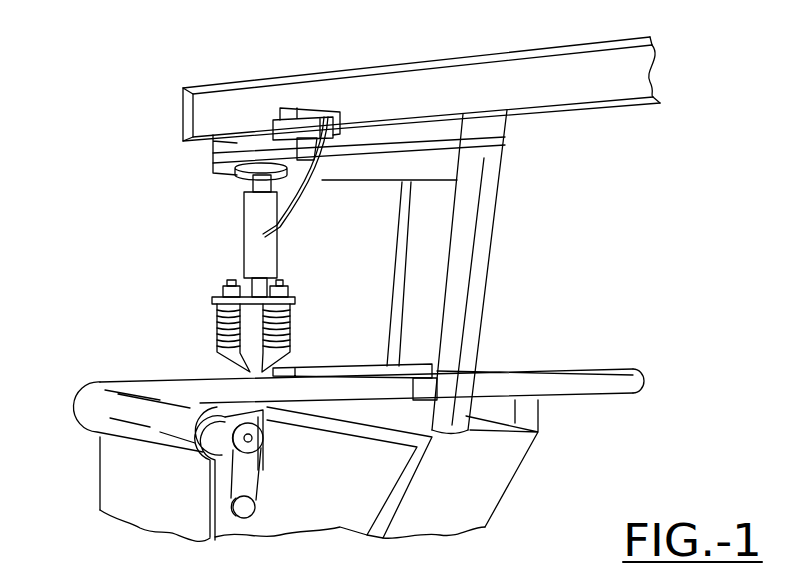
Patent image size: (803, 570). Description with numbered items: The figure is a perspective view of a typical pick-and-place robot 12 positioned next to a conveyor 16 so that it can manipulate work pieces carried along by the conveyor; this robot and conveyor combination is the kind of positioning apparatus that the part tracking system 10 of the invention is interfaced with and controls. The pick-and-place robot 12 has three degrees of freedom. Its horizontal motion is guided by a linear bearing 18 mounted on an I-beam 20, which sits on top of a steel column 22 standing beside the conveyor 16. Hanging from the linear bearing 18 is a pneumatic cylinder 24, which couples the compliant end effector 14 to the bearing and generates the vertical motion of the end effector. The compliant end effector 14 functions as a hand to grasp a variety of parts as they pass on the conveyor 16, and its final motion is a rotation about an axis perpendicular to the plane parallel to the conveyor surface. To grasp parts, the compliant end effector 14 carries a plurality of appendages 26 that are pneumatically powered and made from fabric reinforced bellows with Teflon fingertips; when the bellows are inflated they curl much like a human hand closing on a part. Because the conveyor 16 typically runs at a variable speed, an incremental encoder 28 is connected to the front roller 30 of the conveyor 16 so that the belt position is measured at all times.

The part tracking system 10 is at (510, 355).
The pick-and-place robot 12 is at (182, 176).
The compliant end effector 14 is at (218, 296).
The conveyor 16 is at (162, 390).
The linear bearing 18 is at (315, 108).
The I-beam 20 is at (528, 53).
The steel column 22 is at (486, 223).
The pneumatic cylinder 24 is at (255, 227).
The appendages 26 is at (217, 330).
The incremental encoder 28 is at (250, 515).
The front roller 30 is at (253, 442).